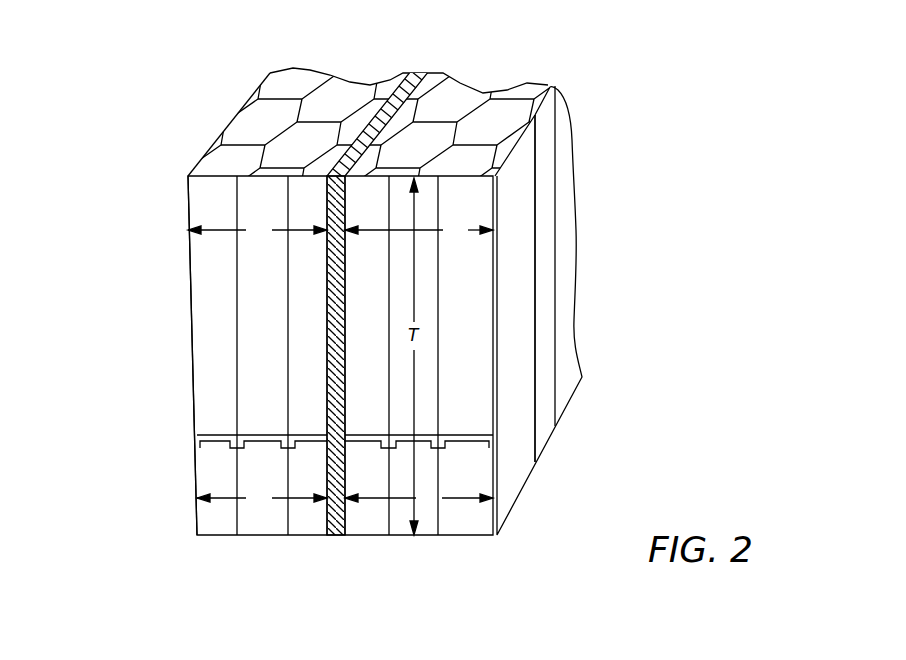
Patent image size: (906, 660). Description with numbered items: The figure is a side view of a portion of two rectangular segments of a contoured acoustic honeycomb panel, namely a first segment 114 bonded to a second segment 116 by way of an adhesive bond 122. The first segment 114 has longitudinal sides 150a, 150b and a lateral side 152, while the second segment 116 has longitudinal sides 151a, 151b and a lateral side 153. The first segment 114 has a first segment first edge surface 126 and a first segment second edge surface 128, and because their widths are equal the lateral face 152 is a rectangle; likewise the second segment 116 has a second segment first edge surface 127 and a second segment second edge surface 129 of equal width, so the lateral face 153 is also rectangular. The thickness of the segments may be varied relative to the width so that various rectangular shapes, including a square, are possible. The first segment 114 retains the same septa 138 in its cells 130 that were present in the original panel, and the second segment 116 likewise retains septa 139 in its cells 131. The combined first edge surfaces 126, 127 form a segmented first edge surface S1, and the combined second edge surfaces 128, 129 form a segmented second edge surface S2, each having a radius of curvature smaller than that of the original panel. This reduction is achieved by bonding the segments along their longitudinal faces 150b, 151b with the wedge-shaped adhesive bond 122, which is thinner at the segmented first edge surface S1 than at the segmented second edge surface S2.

The first segment 114 is at (190, 285).
The second segment 116 is at (548, 293).
The adhesive bond 122 is at (400, 87).
The first segment first edge surface 126 is at (272, 535).
The second segment first edge surface 127 is at (428, 537).
The first segment second edge surface 128 is at (275, 130).
The second segment second edge surface 129 is at (483, 97).
The cells 130 is at (188, 170).
The cells 131 is at (548, 106).
The septa 138 is at (220, 436).
The septa 139 is at (425, 438).
The longitudinal side 150a is at (188, 232).
The longitudinal side 150b is at (327, 292).
The longitudinal side 151a is at (532, 205).
The longitudinal side 151b is at (342, 348).
The lateral side 152 is at (258, 367).
The lateral side 153 is at (460, 410).
The segmented first edge surface S1 is at (360, 535).
The segmented second edge surface S2 is at (268, 167).